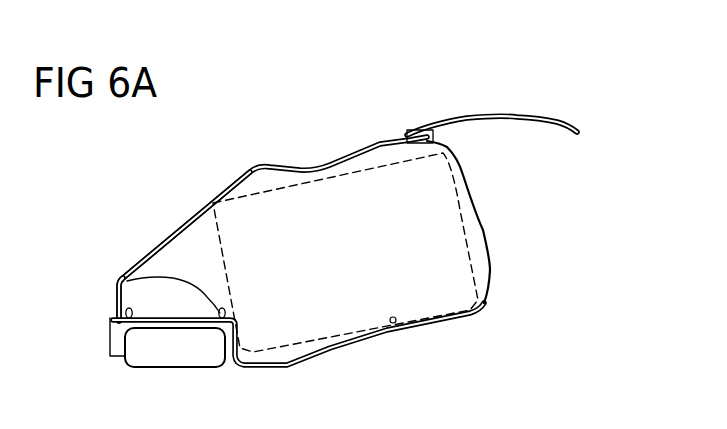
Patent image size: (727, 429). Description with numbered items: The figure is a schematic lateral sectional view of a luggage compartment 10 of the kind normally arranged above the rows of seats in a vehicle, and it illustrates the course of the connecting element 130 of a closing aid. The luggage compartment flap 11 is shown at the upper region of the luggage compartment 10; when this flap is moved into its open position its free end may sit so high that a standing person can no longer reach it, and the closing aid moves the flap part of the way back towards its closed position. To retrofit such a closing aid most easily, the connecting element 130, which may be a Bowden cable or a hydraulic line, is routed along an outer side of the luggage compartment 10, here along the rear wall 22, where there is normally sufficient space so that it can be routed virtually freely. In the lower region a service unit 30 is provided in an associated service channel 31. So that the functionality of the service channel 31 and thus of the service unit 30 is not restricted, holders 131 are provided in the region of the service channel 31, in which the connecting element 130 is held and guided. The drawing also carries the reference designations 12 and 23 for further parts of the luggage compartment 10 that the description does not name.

The luggage compartment 10 is at (437, 212).
The luggage compartment flap 11 is at (494, 113).
The airbag module 12 is at (515, 239).
The rear wall 22 is at (213, 207).
The lower frame bar 23 is at (400, 335).
The service unit 30 is at (175, 347).
The service channel 31 is at (108, 337).
The connecting element 130 is at (160, 232).
The holder 131 is at (120, 278).